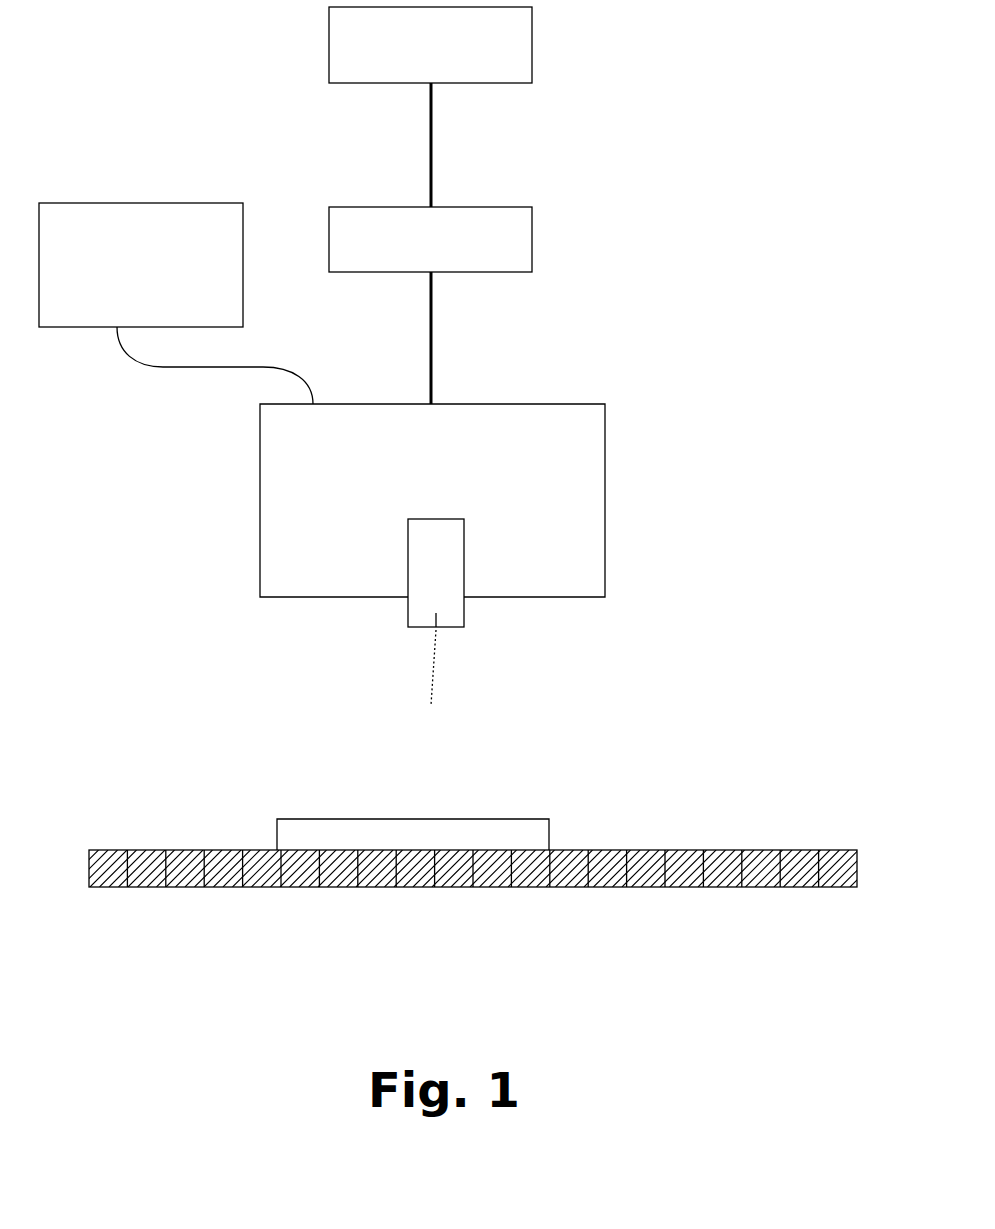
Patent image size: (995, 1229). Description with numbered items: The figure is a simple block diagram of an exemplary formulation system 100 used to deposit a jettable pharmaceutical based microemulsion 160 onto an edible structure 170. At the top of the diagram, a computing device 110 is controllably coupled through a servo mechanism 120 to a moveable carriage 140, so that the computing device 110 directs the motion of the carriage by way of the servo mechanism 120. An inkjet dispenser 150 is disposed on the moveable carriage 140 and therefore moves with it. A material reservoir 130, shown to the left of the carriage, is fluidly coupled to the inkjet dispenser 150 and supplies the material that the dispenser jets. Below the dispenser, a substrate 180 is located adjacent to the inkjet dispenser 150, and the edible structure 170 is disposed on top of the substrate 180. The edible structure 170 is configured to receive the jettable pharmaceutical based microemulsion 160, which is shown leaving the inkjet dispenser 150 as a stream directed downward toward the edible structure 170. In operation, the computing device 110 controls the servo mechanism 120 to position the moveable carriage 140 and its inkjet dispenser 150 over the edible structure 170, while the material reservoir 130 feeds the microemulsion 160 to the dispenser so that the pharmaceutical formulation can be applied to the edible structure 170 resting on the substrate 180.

The formulation system 100 is at (763, 157).
The computing device 110 is at (532, 44).
The servo mechanism 120 is at (532, 240).
The material reservoir 130 is at (176, 303).
The moveable carriage 140 is at (432, 500).
The inkjet dispenser 150 is at (464, 549).
The jettable pharmaceutical based microemulsion 160 is at (436, 657).
The edible structure 170 is at (549, 819).
The substrate 180 is at (601, 894).